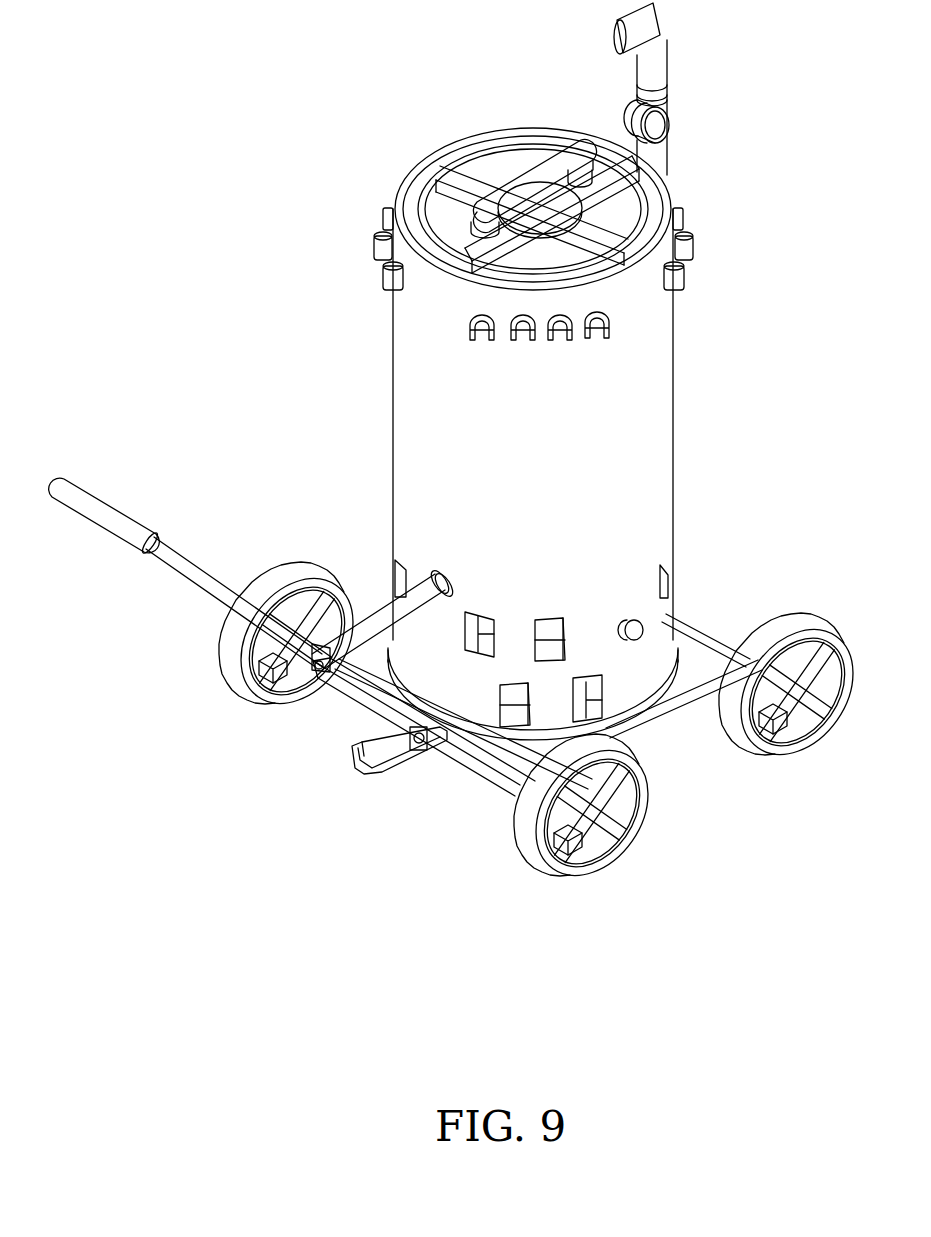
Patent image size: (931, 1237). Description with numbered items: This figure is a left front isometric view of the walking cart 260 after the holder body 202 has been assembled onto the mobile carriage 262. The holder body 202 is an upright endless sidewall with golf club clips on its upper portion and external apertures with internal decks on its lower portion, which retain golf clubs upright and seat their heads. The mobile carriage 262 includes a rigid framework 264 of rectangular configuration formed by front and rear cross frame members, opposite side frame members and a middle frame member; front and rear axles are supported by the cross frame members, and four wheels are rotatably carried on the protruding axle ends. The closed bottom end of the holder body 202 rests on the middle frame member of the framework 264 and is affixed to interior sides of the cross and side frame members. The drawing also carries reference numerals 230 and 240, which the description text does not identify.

The walking cart 260 is at (380, 68).
The valve fitting 240 is at (676, 110).
The holder body 202 is at (676, 445).
The handle 230 is at (168, 578).
The rigid framework 264 is at (653, 742).
The mobile carriage 262 is at (666, 848).